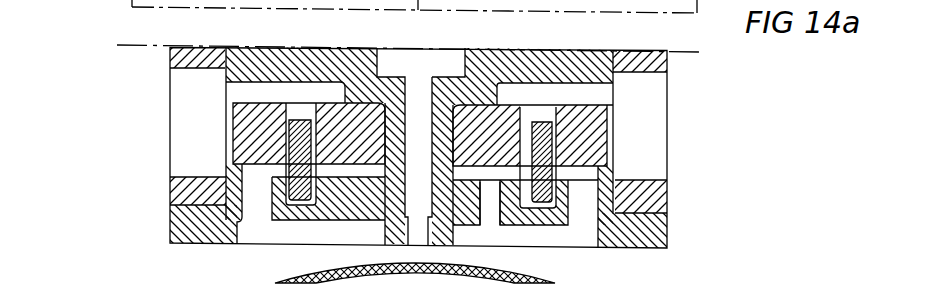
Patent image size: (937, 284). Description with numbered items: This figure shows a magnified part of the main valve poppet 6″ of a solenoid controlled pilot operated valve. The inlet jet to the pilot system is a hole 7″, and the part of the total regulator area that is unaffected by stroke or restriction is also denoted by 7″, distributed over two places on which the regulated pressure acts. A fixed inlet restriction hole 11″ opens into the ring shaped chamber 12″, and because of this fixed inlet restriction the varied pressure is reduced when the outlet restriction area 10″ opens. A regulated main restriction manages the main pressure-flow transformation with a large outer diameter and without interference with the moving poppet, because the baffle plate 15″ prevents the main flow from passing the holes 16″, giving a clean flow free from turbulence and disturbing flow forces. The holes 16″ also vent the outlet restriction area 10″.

The main valve poppet 6 is at (613, 125).
The hole 7 is at (383, 245).
The outlet restriction area (R3) 10 is at (723, 282).
The fixed inlet restriction hole 11 is at (503, 208).
The ring shaped chamber 12 is at (345, 157).
The baffle plate 15 is at (550, 160).
The holes 16 is at (547, 102).